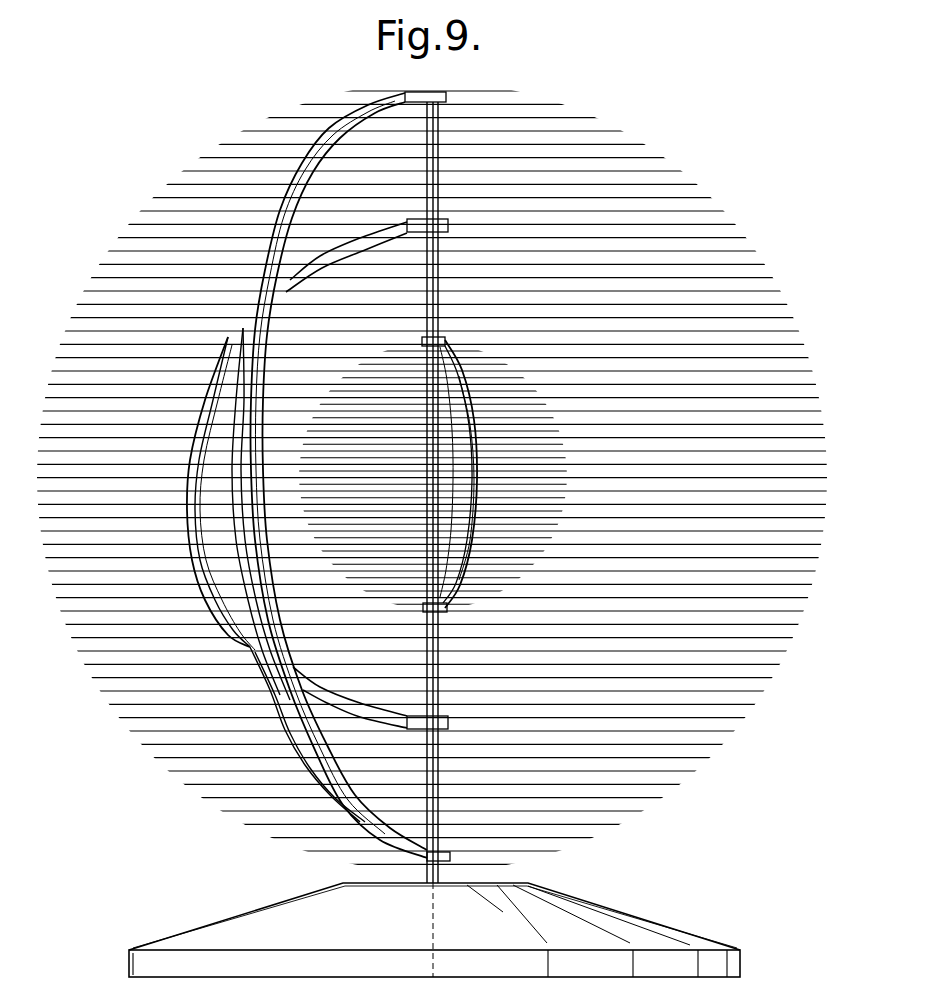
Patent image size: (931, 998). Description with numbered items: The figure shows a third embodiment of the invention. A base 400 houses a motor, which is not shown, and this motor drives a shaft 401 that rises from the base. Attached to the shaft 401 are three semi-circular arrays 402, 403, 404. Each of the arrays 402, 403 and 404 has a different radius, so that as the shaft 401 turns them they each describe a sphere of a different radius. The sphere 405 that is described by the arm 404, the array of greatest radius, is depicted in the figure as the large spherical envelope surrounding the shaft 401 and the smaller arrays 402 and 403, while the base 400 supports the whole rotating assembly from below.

The base 400 is at (650, 938).
The shaft 401 is at (432, 164).
The semi-circular array 402 is at (455, 573).
The semi-circular array 403 is at (228, 337).
The semi-circular array 404 is at (330, 803).
The sphere 405 is at (143, 677).